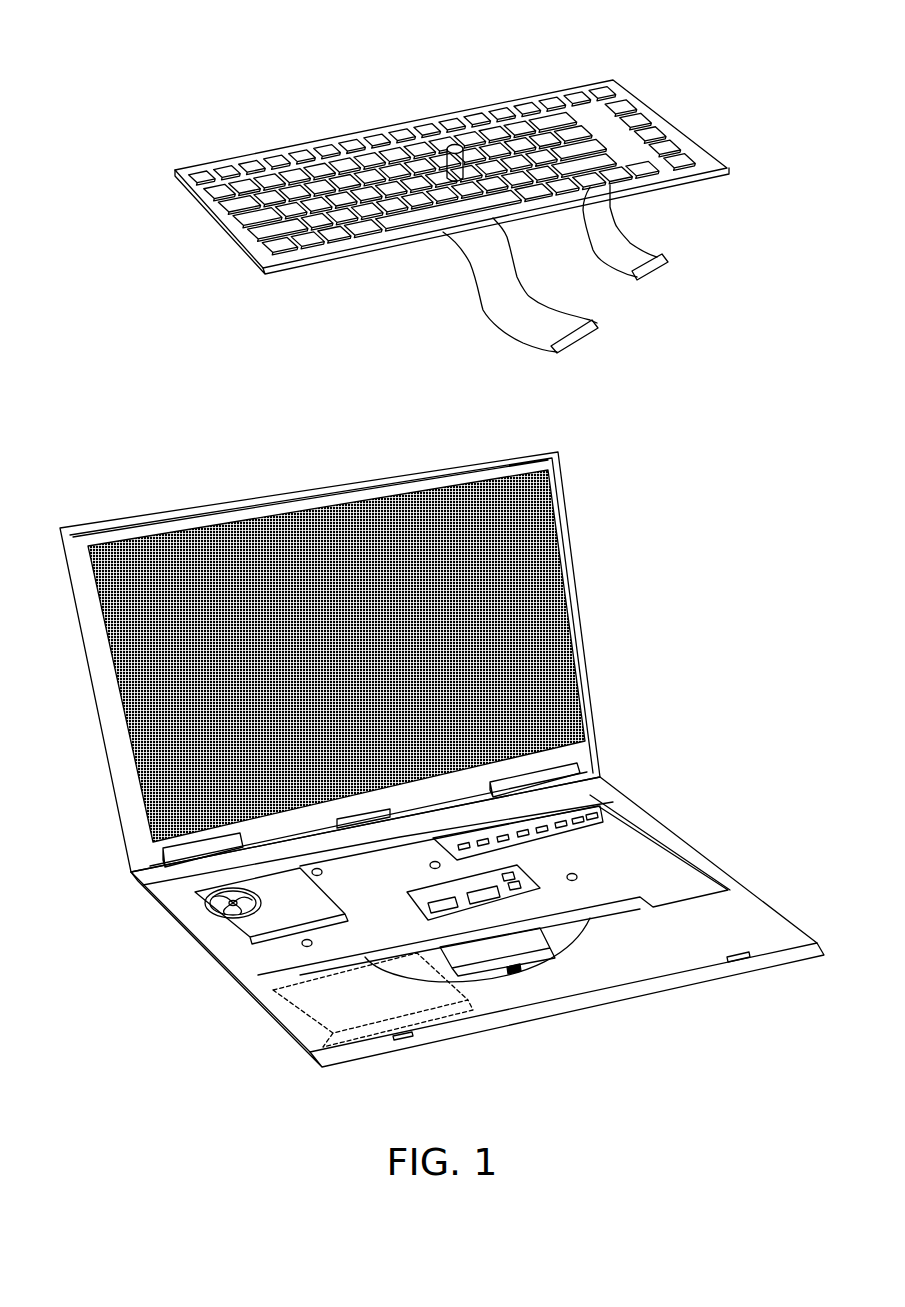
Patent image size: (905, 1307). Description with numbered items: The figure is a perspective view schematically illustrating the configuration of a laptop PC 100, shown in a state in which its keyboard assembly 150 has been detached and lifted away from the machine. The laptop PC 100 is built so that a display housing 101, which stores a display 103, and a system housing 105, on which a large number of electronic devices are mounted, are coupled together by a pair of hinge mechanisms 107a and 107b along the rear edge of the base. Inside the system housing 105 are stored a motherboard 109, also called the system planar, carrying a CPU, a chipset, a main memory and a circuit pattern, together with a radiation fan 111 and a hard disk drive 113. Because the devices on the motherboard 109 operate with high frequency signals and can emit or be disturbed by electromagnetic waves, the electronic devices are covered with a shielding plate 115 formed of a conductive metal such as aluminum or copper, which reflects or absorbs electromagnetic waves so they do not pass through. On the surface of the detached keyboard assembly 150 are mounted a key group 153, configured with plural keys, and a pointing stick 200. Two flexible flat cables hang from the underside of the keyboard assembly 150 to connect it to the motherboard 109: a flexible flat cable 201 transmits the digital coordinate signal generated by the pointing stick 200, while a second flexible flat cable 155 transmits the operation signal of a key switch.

The laptop PC 100 is at (94, 449).
The display housing 101 is at (583, 572).
The display 103 is at (402, 665).
The system housing 105 is at (673, 826).
The hinge mechanism 107a is at (207, 842).
The hinge mechanism 107b is at (510, 775).
The motherboard 109 is at (602, 808).
The radiation fan 111 is at (160, 907).
The hard disk drive 113 is at (326, 987).
The shielding plate 115 is at (664, 882).
The keyboard assembly 150 is at (588, 35).
The key group 153 is at (239, 146).
The flexible flat cable 155 is at (650, 262).
The pointing stick 200 is at (457, 146).
The flexible flat cable 201 is at (532, 290).